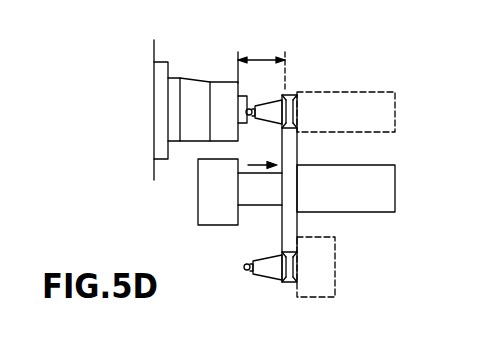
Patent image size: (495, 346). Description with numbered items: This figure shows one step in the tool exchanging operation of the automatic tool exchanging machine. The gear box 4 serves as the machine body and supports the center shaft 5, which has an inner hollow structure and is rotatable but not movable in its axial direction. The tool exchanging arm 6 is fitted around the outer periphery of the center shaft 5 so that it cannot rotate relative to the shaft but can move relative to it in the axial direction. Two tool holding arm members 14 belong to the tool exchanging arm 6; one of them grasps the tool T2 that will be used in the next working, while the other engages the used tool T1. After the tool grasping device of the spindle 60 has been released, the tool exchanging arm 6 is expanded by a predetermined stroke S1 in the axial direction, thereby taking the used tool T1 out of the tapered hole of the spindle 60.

The spindle 60 is at (221, 83).
The predetermined stroke S1 is at (261, 58).
The tool holding arm member 14 is at (293, 146).
The used tool T1 is at (395, 95).
The tool exchanging arm 6 is at (397, 165).
The tool for next working T2 is at (335, 250).
The gear box 4 is at (203, 200).
The center shaft 5 is at (253, 194).